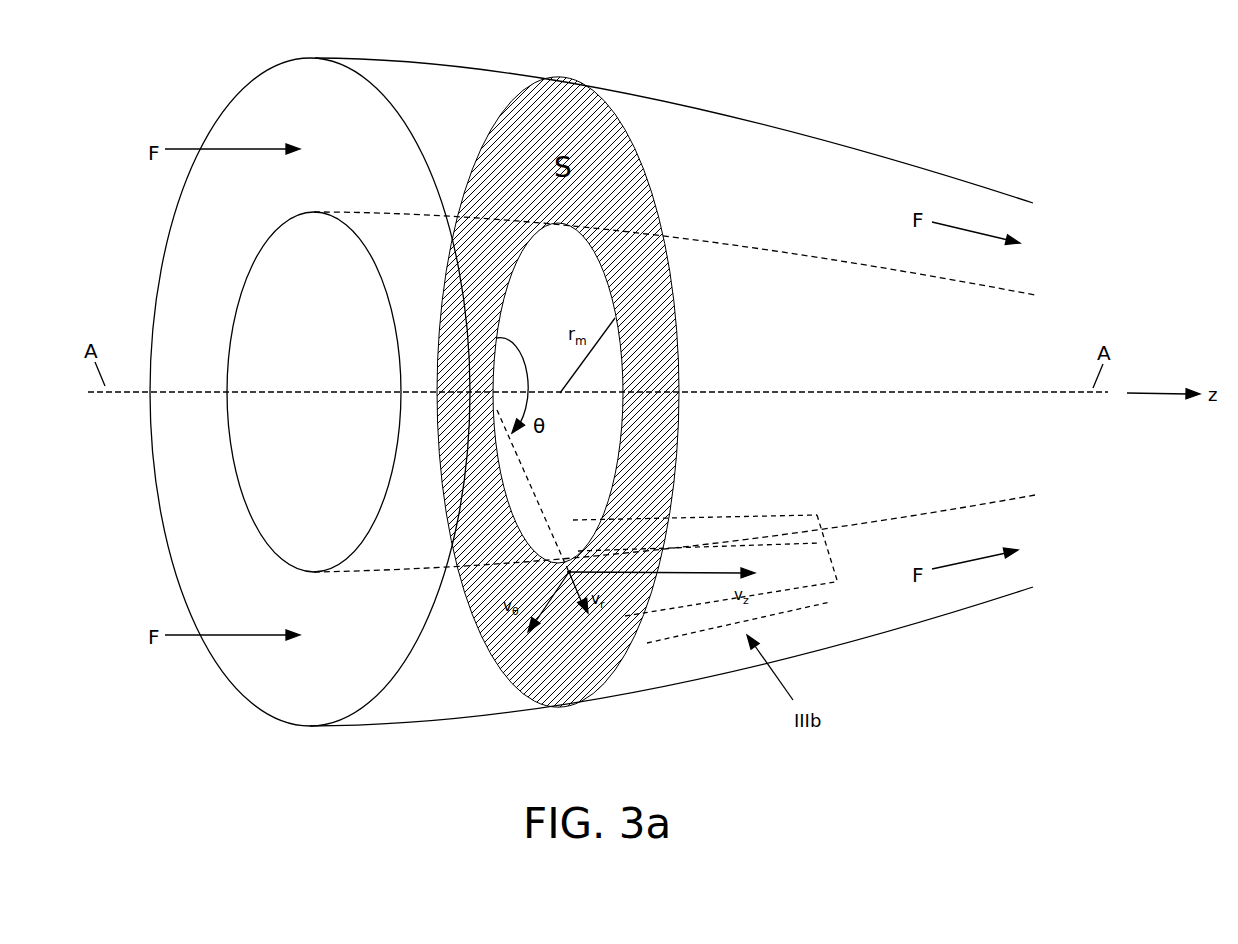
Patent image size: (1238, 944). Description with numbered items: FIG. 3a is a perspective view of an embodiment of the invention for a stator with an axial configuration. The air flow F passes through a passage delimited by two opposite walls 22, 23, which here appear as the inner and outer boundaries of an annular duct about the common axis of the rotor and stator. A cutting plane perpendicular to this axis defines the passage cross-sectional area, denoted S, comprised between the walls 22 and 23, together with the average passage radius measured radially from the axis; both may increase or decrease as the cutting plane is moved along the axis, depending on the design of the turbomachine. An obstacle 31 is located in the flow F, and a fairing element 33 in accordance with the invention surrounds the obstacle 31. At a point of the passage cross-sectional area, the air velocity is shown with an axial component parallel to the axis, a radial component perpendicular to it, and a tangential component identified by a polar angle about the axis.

The wall 22 is at (922, 508).
The wall 23 is at (945, 632).
The obstacle 31 is at (647, 615).
The fairing element 33 is at (586, 612).